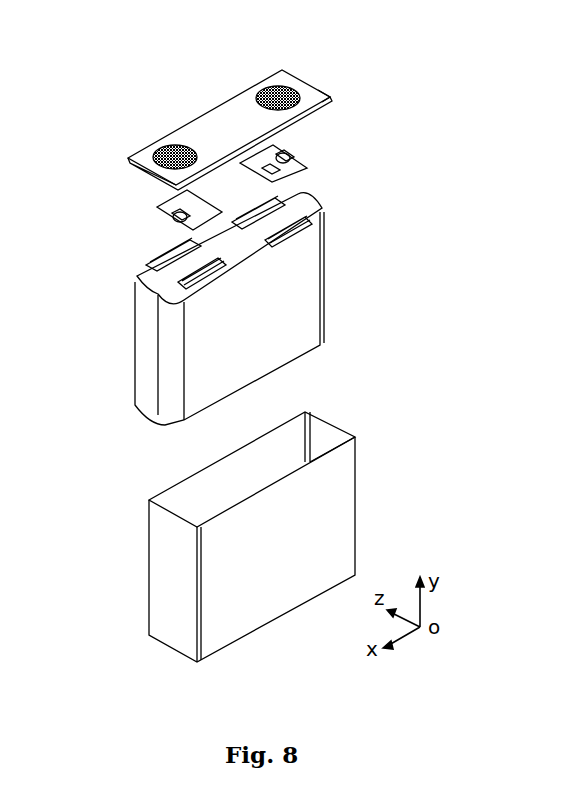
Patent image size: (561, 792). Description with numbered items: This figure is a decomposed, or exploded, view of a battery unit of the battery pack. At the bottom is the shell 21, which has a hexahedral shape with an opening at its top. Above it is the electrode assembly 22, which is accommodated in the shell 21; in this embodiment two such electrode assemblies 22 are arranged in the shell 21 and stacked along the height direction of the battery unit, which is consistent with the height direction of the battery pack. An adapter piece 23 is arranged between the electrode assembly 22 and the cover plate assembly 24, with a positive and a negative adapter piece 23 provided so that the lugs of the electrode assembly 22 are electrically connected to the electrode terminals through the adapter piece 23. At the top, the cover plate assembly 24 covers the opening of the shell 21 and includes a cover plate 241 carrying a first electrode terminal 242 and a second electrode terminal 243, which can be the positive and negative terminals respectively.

The shell 21 is at (338, 506).
The electrode assembly 22 is at (142, 333).
The adapter piece 23 is at (305, 163).
The cover plate assembly 24 is at (250, 109).
The cover plate 241 is at (331, 96).
The first electrode terminal 242 is at (160, 142).
The second electrode terminal 243 is at (281, 82).